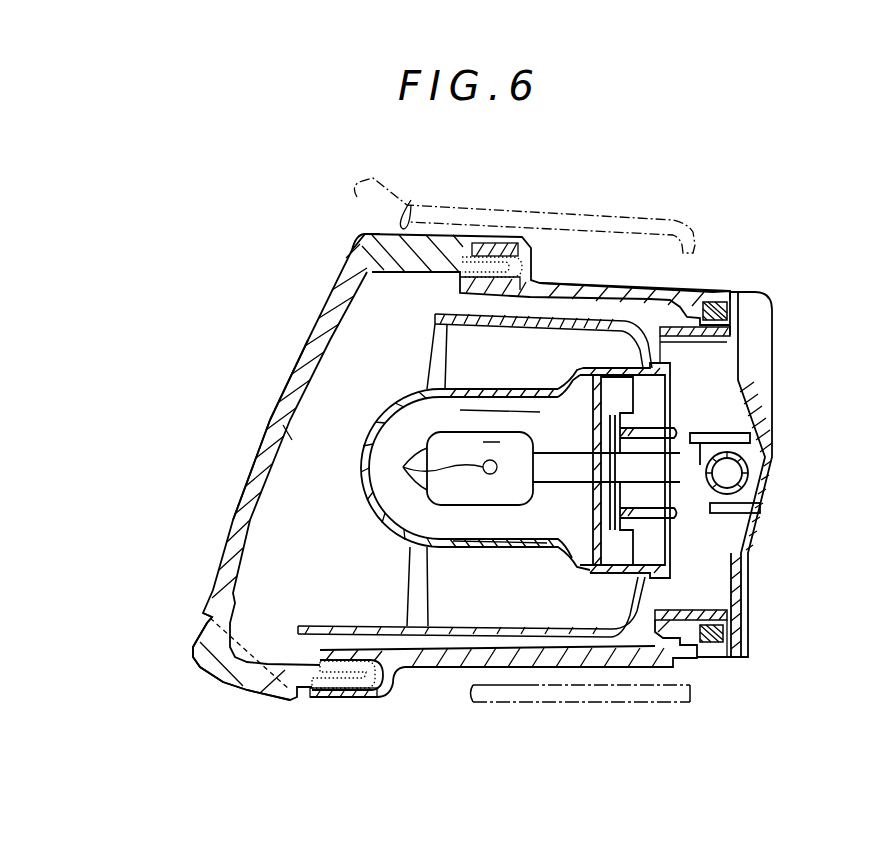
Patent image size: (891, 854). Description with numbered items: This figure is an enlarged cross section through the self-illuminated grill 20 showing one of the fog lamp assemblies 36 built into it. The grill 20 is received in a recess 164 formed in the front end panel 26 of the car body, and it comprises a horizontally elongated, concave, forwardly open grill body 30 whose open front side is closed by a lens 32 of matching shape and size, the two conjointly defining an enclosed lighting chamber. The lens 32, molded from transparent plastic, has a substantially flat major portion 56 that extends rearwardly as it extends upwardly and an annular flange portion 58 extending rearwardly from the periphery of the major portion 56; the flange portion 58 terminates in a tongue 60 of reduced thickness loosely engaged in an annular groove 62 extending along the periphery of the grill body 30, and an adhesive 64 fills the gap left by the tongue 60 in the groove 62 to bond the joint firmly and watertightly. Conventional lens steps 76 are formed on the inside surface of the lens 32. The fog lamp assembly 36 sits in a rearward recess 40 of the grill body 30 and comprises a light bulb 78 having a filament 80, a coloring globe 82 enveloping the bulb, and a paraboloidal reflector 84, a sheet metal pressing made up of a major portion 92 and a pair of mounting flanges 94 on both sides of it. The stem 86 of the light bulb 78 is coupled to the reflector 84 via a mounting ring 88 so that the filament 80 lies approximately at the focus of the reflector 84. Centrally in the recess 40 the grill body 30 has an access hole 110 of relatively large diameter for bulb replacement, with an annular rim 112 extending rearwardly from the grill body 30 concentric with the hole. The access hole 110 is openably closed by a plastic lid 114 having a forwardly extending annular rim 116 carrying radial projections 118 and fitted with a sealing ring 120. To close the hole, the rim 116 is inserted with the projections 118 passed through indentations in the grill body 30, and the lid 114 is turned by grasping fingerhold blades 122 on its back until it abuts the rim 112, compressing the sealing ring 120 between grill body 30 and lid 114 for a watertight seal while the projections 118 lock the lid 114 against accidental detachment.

The self-illuminated grill 20 is at (200, 243).
The front end panel 26 is at (357, 197).
The recess 164 is at (411, 200).
The grill body 30 is at (600, 283).
The lens 32 is at (280, 380).
The fog lamp assembly 36 is at (293, 347).
The rearward recess 40 is at (553, 297).
The major portion 56 is at (227, 542).
The flange portion 58 is at (380, 230).
The tongue 60 is at (480, 245).
The annular groove 62 is at (507, 257).
The adhesive 64 is at (457, 277).
The lens steps 76 is at (288, 428).
The light bulb 78 is at (403, 467).
The filament 80 is at (395, 462).
The coloring globe 82 is at (380, 423).
The paraboloidal reflector 84 is at (585, 330).
The stem 86 is at (573, 483).
The mounting ring 88 is at (640, 405).
The major portion 92 is at (647, 580).
The mounting flanges 94 is at (405, 555).
The access hole 110 is at (687, 330).
The annular rim 112 is at (705, 293).
The plastic lid 114 is at (770, 433).
The annular rim 116 is at (670, 610).
The projection 118 is at (664, 640).
The sealing ring 120 is at (740, 307).
The fingerhold blades 122 is at (767, 328).